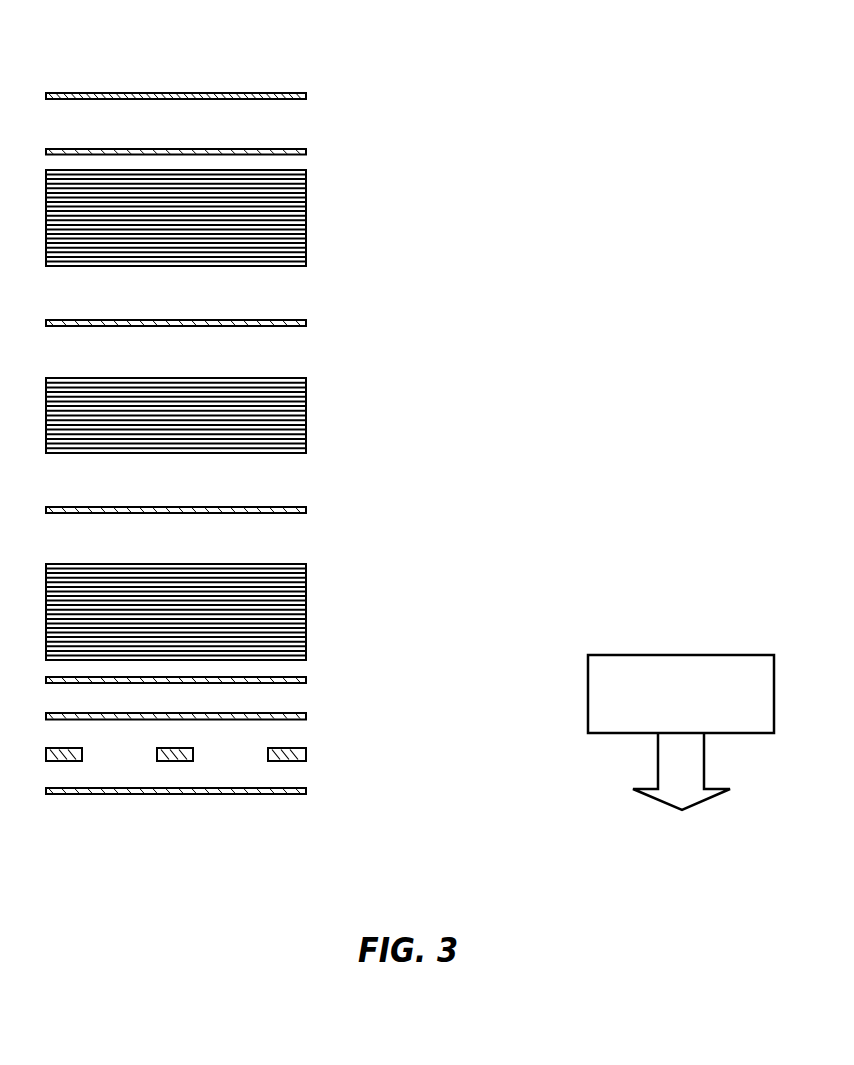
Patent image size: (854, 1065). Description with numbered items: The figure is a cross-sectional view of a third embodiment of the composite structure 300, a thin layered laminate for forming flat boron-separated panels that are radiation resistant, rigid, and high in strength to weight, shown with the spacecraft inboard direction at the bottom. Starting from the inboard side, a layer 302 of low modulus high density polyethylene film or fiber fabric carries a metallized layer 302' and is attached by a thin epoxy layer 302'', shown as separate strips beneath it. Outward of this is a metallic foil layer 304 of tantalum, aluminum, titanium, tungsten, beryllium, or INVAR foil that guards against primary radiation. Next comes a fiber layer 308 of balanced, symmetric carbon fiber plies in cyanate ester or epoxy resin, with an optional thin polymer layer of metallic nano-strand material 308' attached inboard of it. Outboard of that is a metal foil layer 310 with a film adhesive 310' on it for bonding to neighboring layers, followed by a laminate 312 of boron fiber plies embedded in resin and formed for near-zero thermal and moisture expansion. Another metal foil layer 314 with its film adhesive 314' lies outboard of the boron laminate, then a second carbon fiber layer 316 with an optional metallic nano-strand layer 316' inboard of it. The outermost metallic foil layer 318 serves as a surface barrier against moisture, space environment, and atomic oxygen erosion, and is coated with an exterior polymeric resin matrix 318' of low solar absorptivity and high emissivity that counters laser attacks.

The composite structure 300 is at (527, 81).
The layer of low modulus high density polyethylene film or fiber fabric 302 is at (234, 780).
The metallized layer 302' is at (306, 823).
The thin epoxy layer 302'' is at (240, 745).
The metallic foil layer 304 is at (306, 716).
The fiber layer 308 is at (224, 612).
The thin polymer layer of metallic nano-strand material 308' is at (232, 664).
The metal foil layer 310 is at (224, 498).
The film adhesive layer 310' is at (306, 500).
The laminate of boron fiber layers 312 is at (306, 415).
The metal foil layer 314 is at (224, 311).
The film adhesive layer 314' is at (306, 314).
The fiber layer 316 is at (224, 218).
The thin polymer layer of metallic nano-strand material 316' is at (227, 140).
The metallic foil layer 318 is at (224, 84).
The exterior polymeric resin matrix 318' is at (253, 59).